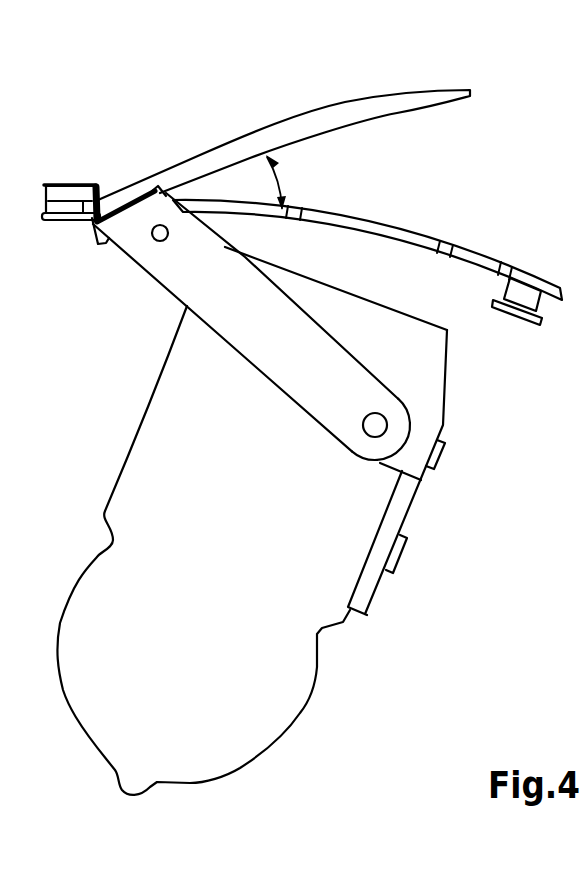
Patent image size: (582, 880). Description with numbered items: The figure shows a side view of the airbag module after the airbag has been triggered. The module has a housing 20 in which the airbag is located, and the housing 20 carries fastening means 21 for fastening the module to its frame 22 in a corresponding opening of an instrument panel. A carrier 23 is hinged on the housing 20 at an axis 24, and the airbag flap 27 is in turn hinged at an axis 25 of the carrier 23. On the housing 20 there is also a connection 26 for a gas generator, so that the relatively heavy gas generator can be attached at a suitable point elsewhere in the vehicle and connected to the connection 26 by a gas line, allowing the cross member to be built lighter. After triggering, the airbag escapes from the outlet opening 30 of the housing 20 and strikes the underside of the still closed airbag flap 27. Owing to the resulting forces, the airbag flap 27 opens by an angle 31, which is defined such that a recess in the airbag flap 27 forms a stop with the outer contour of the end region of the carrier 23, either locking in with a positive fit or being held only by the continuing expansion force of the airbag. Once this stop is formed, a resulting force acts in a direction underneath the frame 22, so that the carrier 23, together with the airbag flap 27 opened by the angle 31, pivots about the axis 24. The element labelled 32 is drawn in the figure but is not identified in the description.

The housing 20 is at (300, 715).
The fastening means 21 is at (63, 221).
The frame 22 is at (63, 183).
The carrier 23 is at (182, 277).
The axis 24 is at (375, 425).
The axis 25 is at (152, 240).
The connection 26 is at (375, 593).
The airbag flap 27 is at (330, 113).
The outlet opening 30 is at (366, 298).
The angle 31 is at (281, 181).
The elastic strip 32 is at (150, 187).